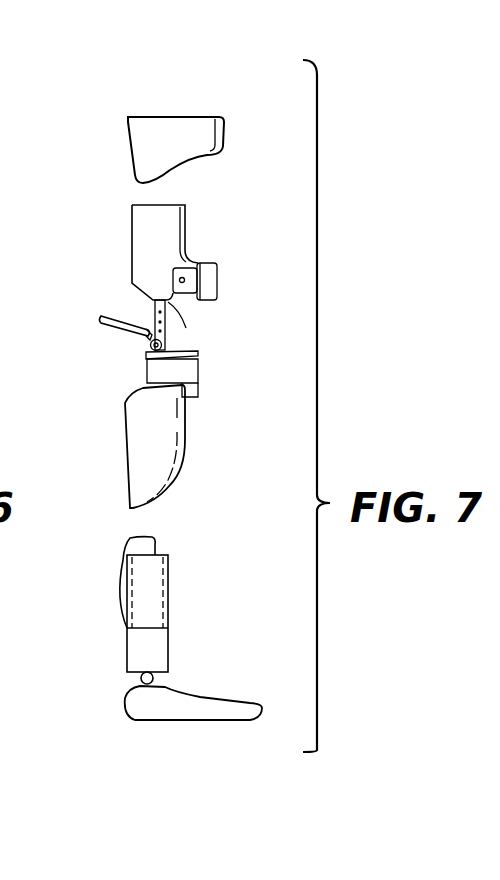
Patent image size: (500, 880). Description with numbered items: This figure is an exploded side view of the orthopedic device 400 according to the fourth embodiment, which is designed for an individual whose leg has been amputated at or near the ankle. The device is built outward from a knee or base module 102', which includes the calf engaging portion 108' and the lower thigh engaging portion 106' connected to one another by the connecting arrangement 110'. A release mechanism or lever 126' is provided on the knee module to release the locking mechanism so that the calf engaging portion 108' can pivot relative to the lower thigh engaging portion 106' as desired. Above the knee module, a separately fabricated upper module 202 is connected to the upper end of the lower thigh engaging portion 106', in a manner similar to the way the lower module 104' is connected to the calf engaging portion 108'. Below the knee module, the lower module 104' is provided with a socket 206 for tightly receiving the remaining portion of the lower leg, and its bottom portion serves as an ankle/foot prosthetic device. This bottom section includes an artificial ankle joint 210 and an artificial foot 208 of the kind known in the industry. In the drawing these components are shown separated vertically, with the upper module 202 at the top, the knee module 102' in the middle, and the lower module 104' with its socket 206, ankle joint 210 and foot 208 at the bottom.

The upper module 202 is at (173, 112).
The lower thigh engaging portion 106' is at (205, 250).
The connecting arrangement 110' is at (212, 329).
The release mechanism or lever 126' is at (80, 345).
The orthopedic device 400 is at (100, 387).
The knee module 102' is at (223, 390).
The calf engaging portion 108' is at (199, 446).
The socket 206 is at (156, 628).
The lower module 104' is at (210, 613).
The artificial ankle joint 210 is at (140, 678).
The artificial foot 208 is at (168, 688).